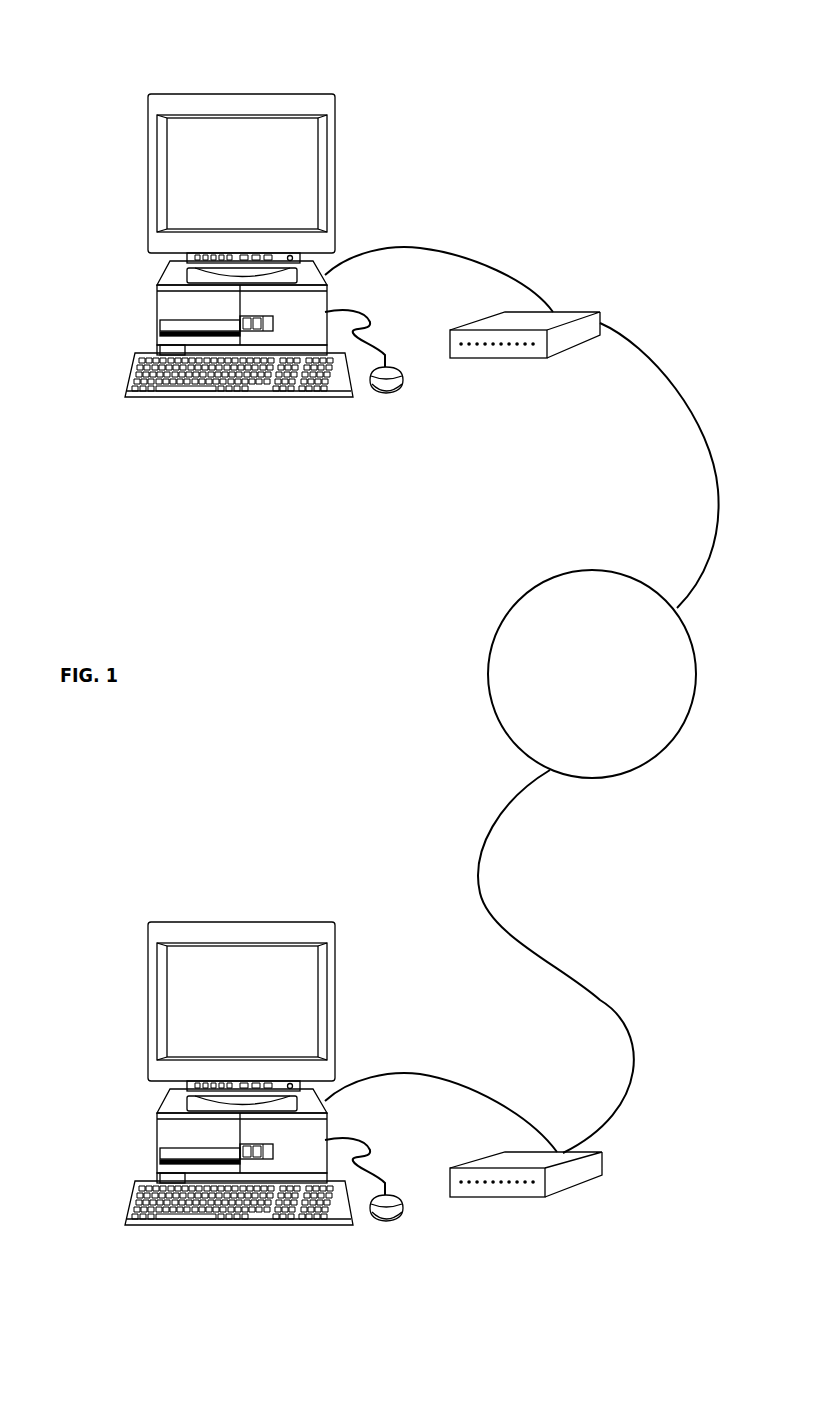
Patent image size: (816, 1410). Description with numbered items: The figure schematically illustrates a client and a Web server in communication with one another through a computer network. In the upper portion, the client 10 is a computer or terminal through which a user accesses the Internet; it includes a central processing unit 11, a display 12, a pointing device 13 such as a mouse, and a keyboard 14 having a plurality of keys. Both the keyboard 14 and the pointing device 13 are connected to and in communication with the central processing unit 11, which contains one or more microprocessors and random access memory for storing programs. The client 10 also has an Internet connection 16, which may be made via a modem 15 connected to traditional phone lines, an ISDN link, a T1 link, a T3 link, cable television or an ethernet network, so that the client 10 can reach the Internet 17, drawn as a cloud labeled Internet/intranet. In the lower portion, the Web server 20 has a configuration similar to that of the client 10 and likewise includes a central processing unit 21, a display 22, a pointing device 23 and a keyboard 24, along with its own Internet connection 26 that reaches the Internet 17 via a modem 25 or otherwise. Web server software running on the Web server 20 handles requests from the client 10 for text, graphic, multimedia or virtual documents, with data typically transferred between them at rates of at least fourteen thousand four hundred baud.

The client 10 is at (167, 69).
The central processing unit 11 is at (187, 308).
The display 12 is at (192, 177).
The pointing device 13 is at (398, 392).
The keyboard 14 is at (155, 392).
The modem 15 is at (557, 356).
The Internet connection 16 is at (458, 248).
The Internet 17 is at (625, 773).
The Web server 20 is at (333, 888).
The central processing unit 21 is at (185, 1138).
The display 22 is at (192, 1012).
The pointing device 23 is at (397, 1222).
The keyboard 24 is at (155, 1222).
The modem 25 is at (558, 1197).
The Internet connection 26 is at (458, 1073).